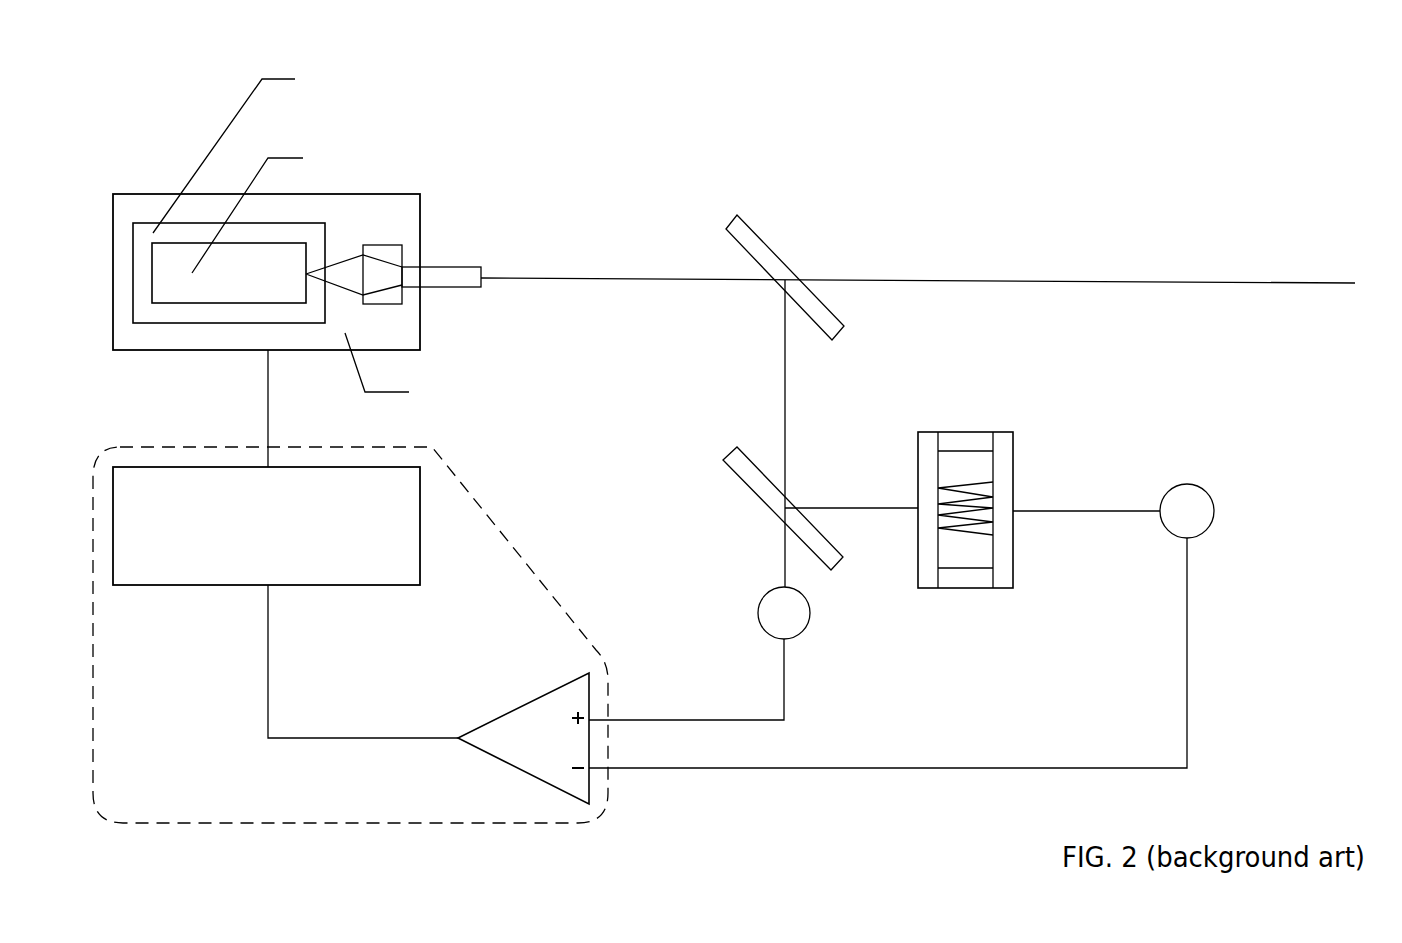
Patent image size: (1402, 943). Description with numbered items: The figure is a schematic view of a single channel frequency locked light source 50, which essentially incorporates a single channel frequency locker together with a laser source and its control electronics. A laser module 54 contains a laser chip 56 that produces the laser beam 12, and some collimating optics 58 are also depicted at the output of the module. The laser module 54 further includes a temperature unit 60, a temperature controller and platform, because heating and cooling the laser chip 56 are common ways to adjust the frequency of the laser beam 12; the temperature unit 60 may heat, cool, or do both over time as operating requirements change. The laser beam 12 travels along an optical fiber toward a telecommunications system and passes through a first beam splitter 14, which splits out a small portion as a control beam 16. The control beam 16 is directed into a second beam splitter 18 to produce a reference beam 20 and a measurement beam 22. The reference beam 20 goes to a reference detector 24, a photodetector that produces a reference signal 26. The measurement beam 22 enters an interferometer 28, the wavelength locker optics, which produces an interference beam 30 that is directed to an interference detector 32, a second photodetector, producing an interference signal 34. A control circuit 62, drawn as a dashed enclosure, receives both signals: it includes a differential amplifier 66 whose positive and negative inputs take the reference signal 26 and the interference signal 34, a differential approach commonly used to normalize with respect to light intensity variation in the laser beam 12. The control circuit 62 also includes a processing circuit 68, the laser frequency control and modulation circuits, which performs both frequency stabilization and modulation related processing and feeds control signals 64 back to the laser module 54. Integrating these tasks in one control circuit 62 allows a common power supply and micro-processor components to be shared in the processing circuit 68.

The single channel frequency locked light source 50 is at (1278, 70).
The laser beam 12 is at (608, 277).
The first beam splitter 14 is at (732, 215).
The control beam 16 is at (785, 373).
The second beam splitter 18 is at (733, 453).
The reference beam 20 is at (785, 557).
The measurement beam 22 is at (839, 508).
The reference detector 24 is at (758, 613).
The reference signal 26 is at (693, 720).
The interferometer 28 is at (1013, 568).
The interference beam 30 is at (1060, 511).
The interference detector 32 is at (1214, 512).
The interference signal 34 is at (693, 768).
The laser module 54 is at (422, 213).
The laser chip 56 is at (285, 227).
The collimating optics 58 is at (431, 295).
The temperature unit 60 is at (142, 232).
The control circuit 62 is at (468, 488).
The control signals 64 is at (268, 408).
The differential amplifier 66 is at (428, 694).
The processing circuit 68 is at (218, 585).